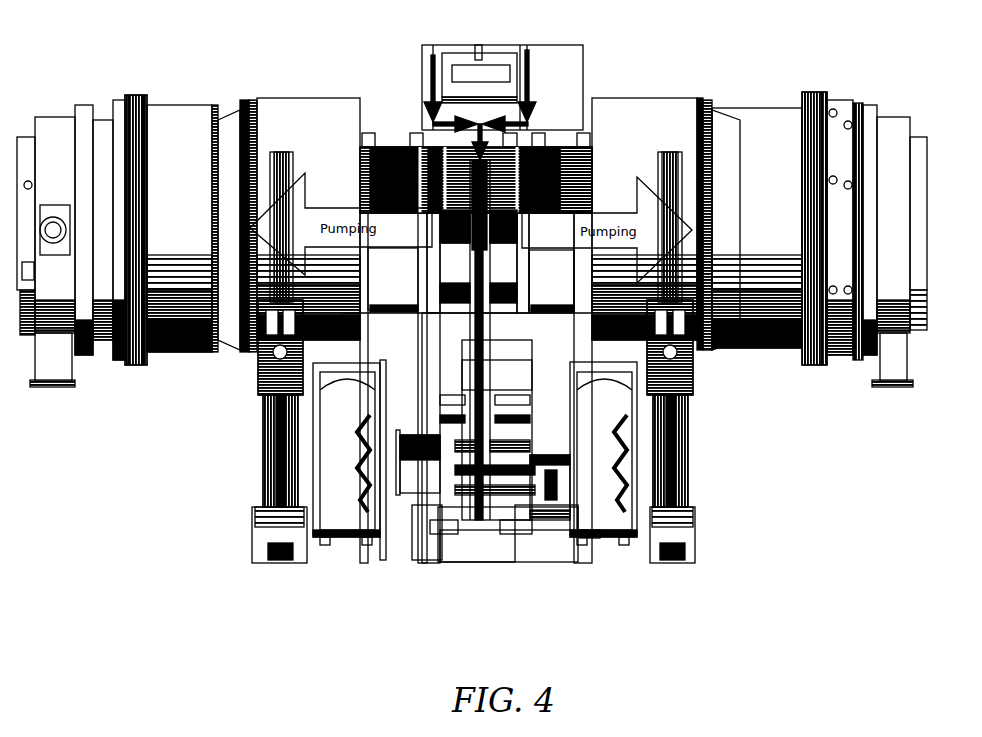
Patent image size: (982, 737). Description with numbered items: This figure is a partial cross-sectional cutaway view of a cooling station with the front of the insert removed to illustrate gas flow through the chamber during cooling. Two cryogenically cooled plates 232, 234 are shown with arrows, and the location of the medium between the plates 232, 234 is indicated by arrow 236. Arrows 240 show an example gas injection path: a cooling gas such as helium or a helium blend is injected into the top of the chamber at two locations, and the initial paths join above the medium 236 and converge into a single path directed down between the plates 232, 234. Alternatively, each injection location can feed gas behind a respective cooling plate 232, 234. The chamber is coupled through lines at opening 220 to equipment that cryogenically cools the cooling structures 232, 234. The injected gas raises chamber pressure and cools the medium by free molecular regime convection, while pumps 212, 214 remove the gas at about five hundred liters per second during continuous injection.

The pump 212 is at (135, 97).
The pump 214 is at (803, 95).
The opening 220 is at (410, 490).
The cryogenically cooled plate 232 is at (460, 230).
The cryogenically cooled plate 234 is at (490, 232).
The arrow indicating medium location 236 is at (486, 254).
The arrows showing gas injection path 240 is at (527, 53).